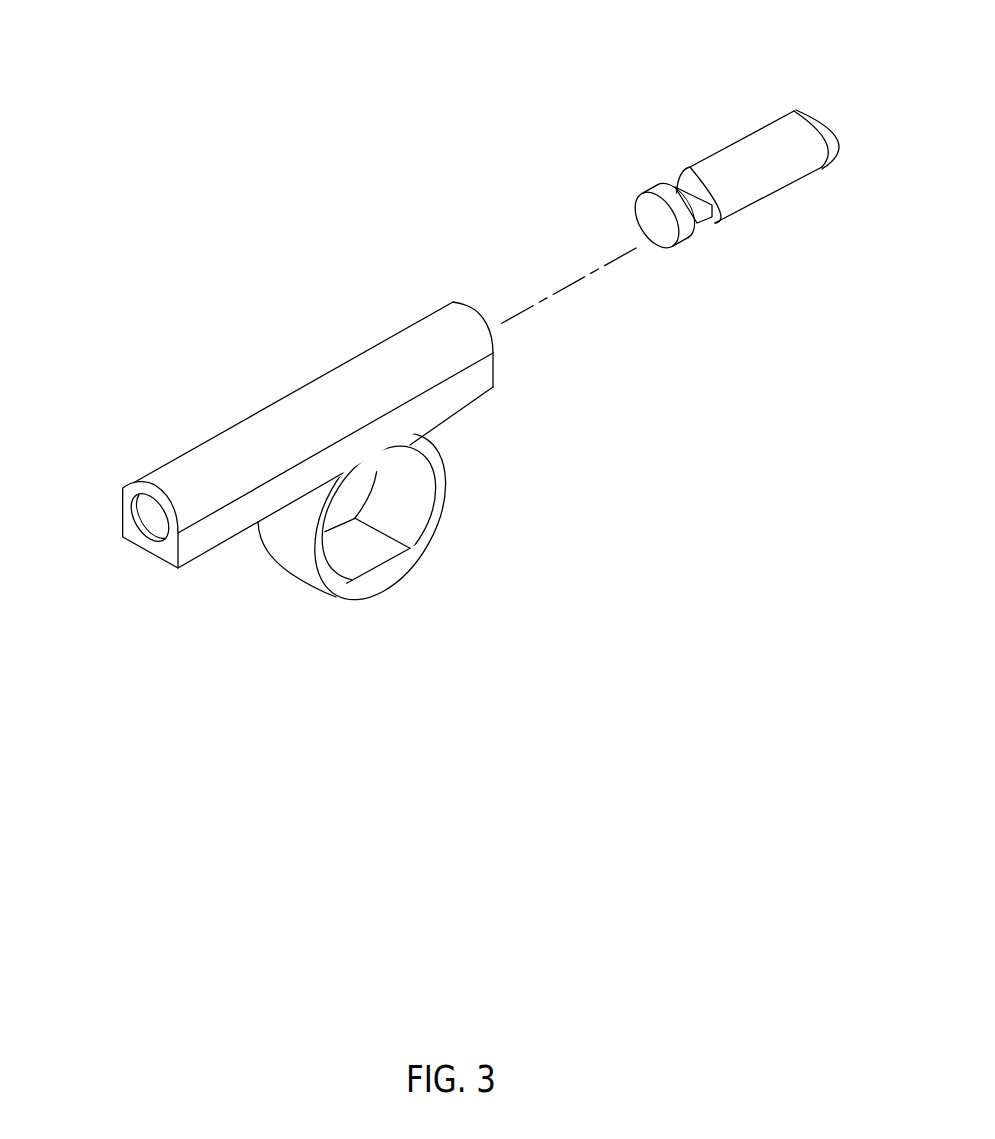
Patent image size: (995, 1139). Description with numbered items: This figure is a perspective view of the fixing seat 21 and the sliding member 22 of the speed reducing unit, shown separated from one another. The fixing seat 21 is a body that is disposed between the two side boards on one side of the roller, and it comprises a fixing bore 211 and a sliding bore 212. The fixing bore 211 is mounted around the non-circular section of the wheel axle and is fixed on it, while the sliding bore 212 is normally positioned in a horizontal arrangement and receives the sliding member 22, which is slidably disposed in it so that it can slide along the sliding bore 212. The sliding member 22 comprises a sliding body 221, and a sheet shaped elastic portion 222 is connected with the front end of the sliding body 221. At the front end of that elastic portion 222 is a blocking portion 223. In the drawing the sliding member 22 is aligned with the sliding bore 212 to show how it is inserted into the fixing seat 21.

The fixing seat 21 is at (292, 414).
The fixing bore 211 is at (393, 507).
The sliding bore 212 is at (153, 517).
The sliding member 22 is at (666, 154).
The sliding body 221 is at (767, 180).
The elastic portion 222 is at (697, 210).
The blocking portion 223 is at (650, 226).